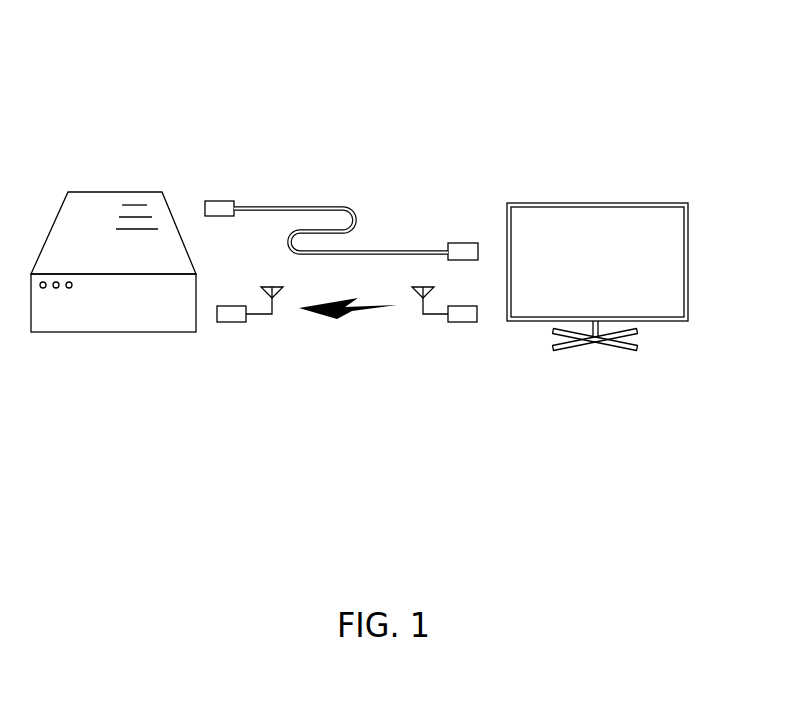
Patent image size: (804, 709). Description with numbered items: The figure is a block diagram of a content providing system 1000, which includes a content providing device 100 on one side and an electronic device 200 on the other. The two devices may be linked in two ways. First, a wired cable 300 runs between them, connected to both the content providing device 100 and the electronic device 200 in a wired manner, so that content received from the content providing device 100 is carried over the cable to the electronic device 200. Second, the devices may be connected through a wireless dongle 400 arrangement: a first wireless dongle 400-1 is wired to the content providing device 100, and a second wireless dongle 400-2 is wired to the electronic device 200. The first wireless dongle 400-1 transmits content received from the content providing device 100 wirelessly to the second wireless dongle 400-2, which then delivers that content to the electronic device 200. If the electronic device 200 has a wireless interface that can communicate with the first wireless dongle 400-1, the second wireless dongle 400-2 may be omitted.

The content providing system 1000 is at (437, 96).
The content providing device 100 is at (145, 192).
The electronic device 200 is at (668, 203).
The wired cable 300 is at (286, 207).
The wireless dongle 400 is at (472, 390).
The first wireless dongle 400-1 is at (230, 322).
The second wireless dongle 400-2 is at (462, 322).